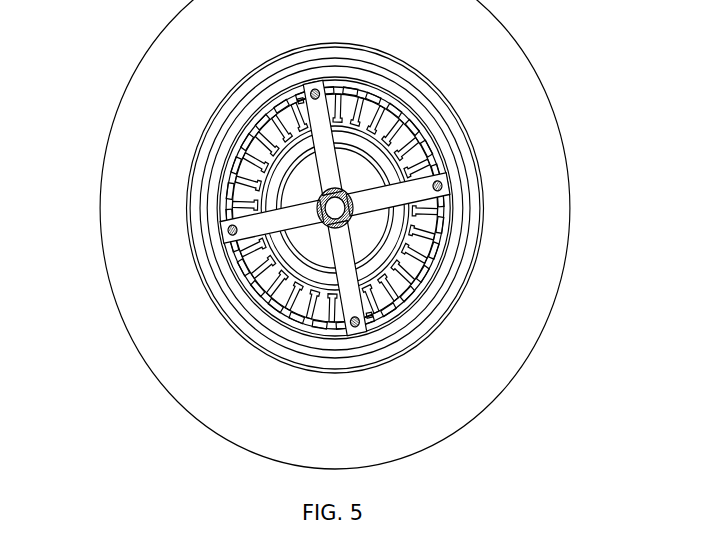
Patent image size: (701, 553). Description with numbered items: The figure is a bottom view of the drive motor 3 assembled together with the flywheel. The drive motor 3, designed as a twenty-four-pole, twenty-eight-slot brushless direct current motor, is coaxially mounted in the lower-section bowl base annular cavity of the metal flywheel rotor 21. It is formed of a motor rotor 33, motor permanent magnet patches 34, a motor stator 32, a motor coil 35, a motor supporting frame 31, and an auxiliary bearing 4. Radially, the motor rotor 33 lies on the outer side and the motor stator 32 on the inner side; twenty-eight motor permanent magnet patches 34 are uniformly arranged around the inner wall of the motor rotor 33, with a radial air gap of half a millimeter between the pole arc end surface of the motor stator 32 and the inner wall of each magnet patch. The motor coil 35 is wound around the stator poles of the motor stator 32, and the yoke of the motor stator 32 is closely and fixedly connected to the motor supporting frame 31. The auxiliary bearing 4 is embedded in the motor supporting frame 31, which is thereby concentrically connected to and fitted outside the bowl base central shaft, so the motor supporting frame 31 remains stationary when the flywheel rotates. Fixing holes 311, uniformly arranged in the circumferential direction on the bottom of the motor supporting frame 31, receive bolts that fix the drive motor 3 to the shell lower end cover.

The metal flywheel rotor 21 is at (182, 80).
The drive motor 3 is at (300, 278).
The auxiliary bearing 4 is at (316, 206).
The motor supporting frame 31 is at (451, 251).
The fixing holes 311 is at (446, 189).
The motor stator 32 is at (407, 289).
The motor rotor 33 is at (368, 321).
The motor permanent magnet patches 34 is at (366, 96).
The motor coil 35 is at (399, 148).